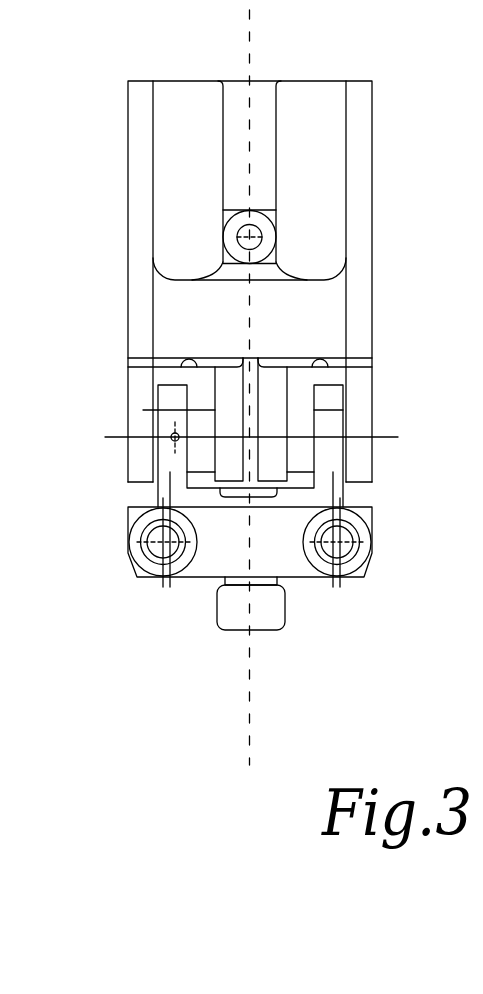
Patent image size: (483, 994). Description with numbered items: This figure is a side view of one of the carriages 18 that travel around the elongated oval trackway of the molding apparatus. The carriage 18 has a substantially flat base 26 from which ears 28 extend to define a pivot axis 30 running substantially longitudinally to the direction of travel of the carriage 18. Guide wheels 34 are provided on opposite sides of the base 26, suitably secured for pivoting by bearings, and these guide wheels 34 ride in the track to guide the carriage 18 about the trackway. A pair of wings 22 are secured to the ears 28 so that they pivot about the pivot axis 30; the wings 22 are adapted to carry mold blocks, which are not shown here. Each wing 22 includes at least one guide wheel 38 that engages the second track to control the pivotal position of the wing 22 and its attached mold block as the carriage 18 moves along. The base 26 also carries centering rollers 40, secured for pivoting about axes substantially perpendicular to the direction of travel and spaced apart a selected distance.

The carriage 18 is at (234, 386).
The wing 22 is at (303, 107).
The base 26 is at (213, 555).
The ear 28 is at (172, 460).
The pivot axis 30 is at (380, 437).
The guide wheel 34 is at (152, 563).
The guide wheel 38 is at (262, 231).
The centering roller 40 is at (262, 612).